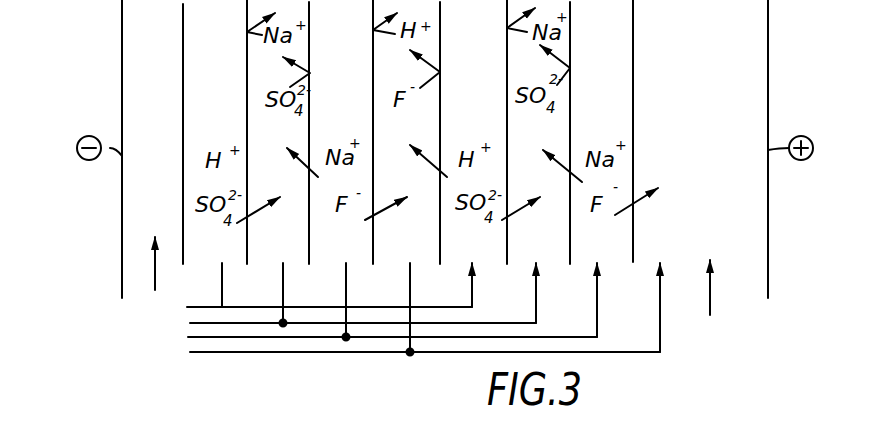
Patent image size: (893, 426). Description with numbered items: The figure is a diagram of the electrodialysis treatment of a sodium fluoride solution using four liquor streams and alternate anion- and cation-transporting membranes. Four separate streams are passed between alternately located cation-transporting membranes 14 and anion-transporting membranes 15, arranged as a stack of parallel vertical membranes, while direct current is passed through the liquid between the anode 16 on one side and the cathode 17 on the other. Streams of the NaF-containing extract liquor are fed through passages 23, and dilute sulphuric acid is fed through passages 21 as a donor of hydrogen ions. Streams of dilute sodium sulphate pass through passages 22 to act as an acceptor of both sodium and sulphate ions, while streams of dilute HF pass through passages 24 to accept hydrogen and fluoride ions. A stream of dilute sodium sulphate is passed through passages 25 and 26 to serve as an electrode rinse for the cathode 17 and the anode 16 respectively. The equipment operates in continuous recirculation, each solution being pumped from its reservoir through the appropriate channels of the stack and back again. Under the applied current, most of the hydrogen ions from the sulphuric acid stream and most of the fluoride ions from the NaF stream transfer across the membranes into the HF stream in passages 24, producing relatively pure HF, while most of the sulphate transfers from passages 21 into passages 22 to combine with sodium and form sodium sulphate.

The cation-transporting membrane 14 is at (183, 48).
The anion-transporting membrane 15 is at (247, 47).
The anode 16 is at (768, 110).
The cathode 17 is at (122, 80).
The passages for dilute sulphuric acid 21 is at (182, 314).
The passages for dilute sodium sulphate 22 is at (183, 328).
The passages for NaF-containing extract liquor 23 is at (187, 340).
The passages for dilute HF 24 is at (188, 352).
The cathode rinse passage 25 is at (149, 280).
The anode rinse passage 26 is at (706, 304).